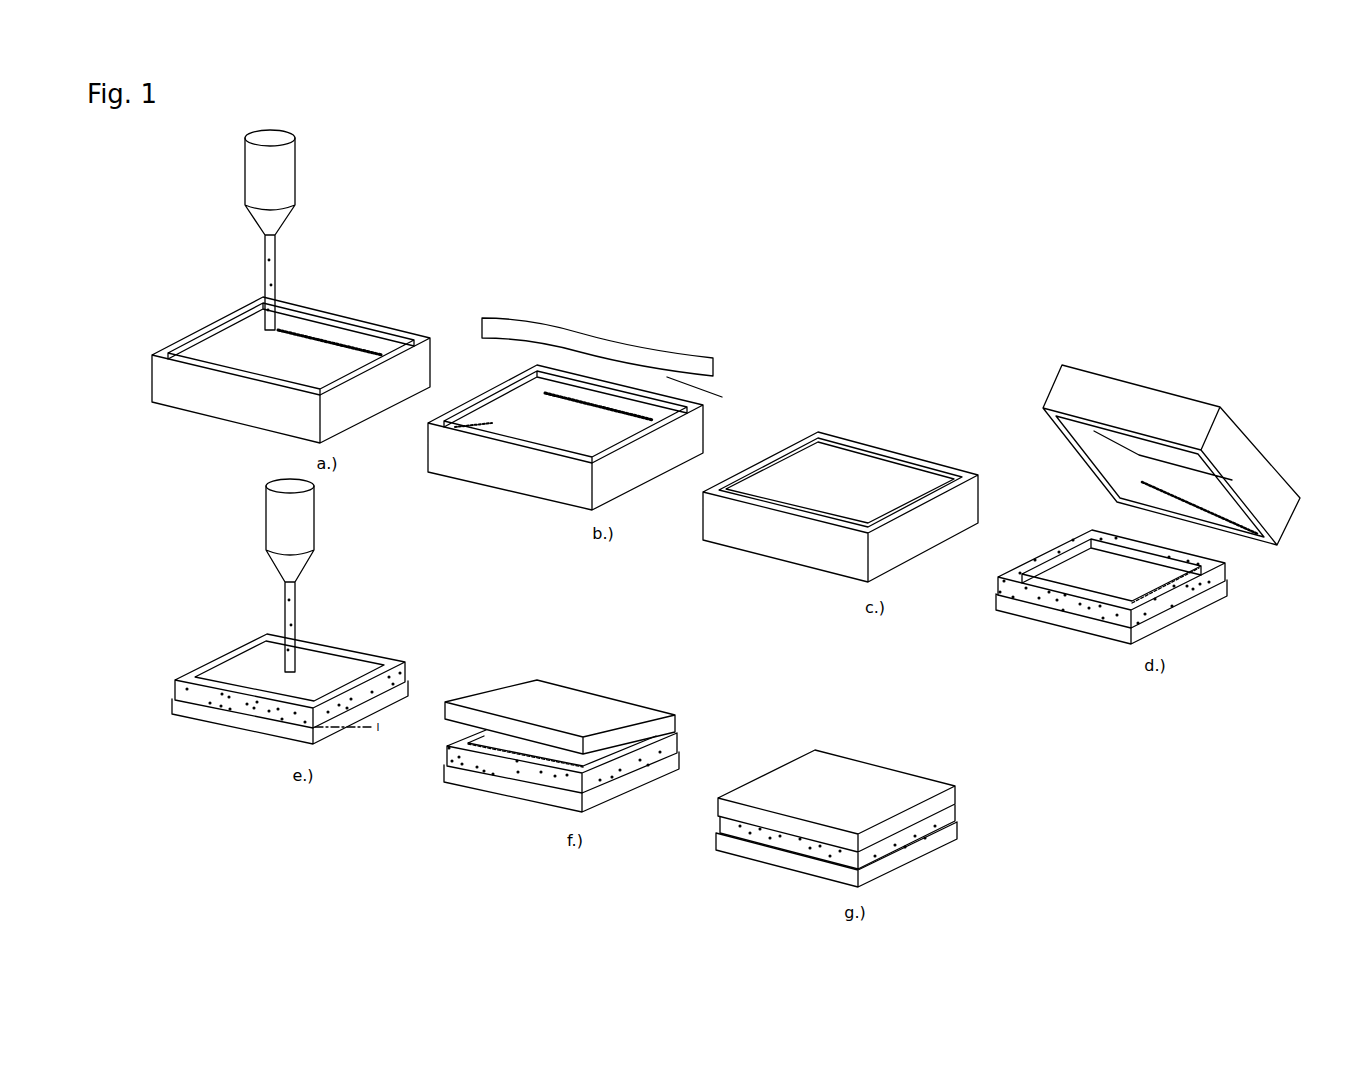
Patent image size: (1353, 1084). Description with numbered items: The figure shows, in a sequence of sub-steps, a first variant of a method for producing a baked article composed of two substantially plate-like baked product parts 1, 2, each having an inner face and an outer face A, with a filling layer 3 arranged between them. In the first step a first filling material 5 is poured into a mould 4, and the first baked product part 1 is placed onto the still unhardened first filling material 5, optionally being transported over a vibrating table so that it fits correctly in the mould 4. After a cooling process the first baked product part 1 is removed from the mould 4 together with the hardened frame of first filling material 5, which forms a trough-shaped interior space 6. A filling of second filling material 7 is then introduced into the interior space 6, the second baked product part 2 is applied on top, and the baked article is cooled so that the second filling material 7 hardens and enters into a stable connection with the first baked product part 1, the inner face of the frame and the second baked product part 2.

The first baked product part 1 is at (582, 335).
The second baked product part 2 is at (572, 703).
The filling layer 3 is at (927, 825).
The mould 4 is at (190, 397).
The first filling material 5 is at (277, 290).
The interior space 6 is at (1098, 562).
The second filling material 7 is at (283, 662).
The outer face A is at (630, 350).